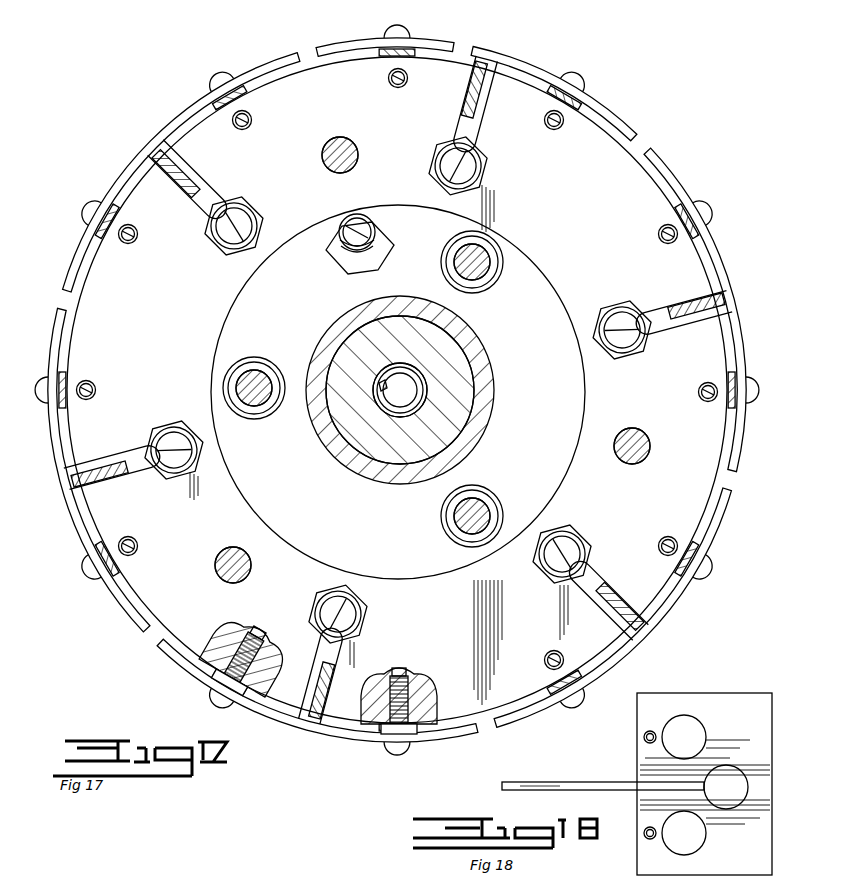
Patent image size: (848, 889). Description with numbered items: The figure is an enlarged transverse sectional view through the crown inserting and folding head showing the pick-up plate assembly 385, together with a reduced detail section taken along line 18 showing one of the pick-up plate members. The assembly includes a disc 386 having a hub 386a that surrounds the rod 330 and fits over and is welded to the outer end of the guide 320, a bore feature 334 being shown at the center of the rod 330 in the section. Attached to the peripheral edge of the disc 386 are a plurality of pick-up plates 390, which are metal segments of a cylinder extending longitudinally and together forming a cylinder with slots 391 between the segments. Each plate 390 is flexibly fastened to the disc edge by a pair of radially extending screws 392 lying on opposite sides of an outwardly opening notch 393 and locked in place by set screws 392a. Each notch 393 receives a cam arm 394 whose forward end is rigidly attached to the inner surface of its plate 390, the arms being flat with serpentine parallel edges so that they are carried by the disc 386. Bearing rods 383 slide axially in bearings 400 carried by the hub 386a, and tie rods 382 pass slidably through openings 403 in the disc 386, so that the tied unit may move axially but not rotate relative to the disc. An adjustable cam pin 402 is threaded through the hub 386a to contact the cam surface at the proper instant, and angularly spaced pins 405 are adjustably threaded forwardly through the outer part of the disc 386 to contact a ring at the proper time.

In FIG. 17, the section line 18— 18 is at (80, 305).
In FIG. 17, the guide 320 is at (482, 372).
In FIG. 17, the rod 330 is at (452, 352).
In FIG. 17, the bore with keyway 334 is at (383, 398).
In FIG. 17, the tie rods 382 is at (358, 154).
In FIG. 17, the bearing rods 383 is at (248, 374).
In FIG. 17, the pick-up plate assembly 385 is at (150, 188).
In FIG. 17, the disc 386 is at (628, 168).
In FIG. 17, the hub 386a is at (248, 296).
In FIG. 17, the pick-up plates 390 is at (538, 62).
In FIG. 18, the pick-up plates 390 is at (720, 700).
In FIG. 17, the slots 391 is at (318, 50).
In FIG. 17, the screws 392 is at (588, 82).
In FIG. 18, the screws 392 is at (644, 734).
In FIG. 17, the set screws 392a is at (92, 382).
In FIG. 17, the notch 393 is at (482, 124).
In FIG. 17, the cam arm 394 is at (196, 176).
In FIG. 18, the cam arm 394 is at (570, 780).
In FIG. 17, the bearings 400 is at (444, 266).
In FIG. 17, the adjustable cam pin 402 is at (376, 236).
In FIG. 17, the openings 403 is at (326, 150).
In FIG. 17, the pins 405 is at (476, 165).